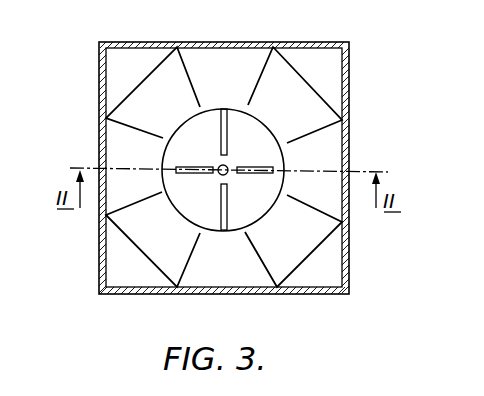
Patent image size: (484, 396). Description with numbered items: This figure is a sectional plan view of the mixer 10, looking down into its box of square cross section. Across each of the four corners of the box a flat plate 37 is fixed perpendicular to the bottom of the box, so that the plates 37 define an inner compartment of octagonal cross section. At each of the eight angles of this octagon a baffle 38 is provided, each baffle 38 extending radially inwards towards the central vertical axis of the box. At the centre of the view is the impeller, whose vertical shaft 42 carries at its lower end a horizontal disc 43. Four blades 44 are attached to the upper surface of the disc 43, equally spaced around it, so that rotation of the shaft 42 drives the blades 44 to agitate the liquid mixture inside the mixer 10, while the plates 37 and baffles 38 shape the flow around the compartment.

The mixer 10 is at (95, 118).
The flat plate 37 is at (145, 257).
The baffle 38 is at (267, 72).
The vertical shaft 42 is at (229, 175).
The horizontal disc 43 is at (207, 156).
The blades 44 is at (180, 172).